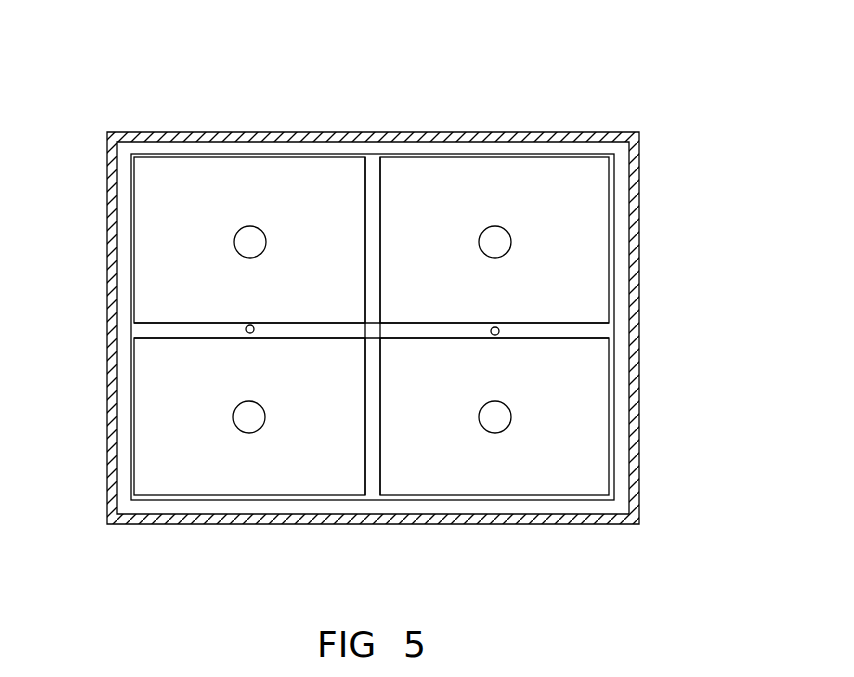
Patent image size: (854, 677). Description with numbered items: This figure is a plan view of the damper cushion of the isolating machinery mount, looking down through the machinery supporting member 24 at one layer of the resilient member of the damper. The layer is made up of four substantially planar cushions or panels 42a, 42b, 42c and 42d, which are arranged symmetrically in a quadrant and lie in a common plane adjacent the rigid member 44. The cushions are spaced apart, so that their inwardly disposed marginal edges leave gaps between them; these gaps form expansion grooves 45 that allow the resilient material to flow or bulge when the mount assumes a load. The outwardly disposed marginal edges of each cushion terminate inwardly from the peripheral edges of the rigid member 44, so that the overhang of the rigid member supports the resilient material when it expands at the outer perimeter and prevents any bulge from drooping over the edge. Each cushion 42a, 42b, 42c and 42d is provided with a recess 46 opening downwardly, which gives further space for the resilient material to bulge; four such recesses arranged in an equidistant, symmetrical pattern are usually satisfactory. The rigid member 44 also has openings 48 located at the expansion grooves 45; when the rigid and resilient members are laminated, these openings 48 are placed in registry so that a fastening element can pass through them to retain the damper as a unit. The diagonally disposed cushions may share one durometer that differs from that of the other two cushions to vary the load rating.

The machinery supporting member 24 is at (532, 135).
The cushion 42a is at (249, 240).
The cushion 42b is at (494, 240).
The cushion 42c is at (249, 416).
The cushion 42d is at (494, 416).
The rigid member 44 is at (617, 467).
The expansion groove 45 is at (372, 180).
The recess 46 is at (234, 241).
The opening 48 is at (500, 327).